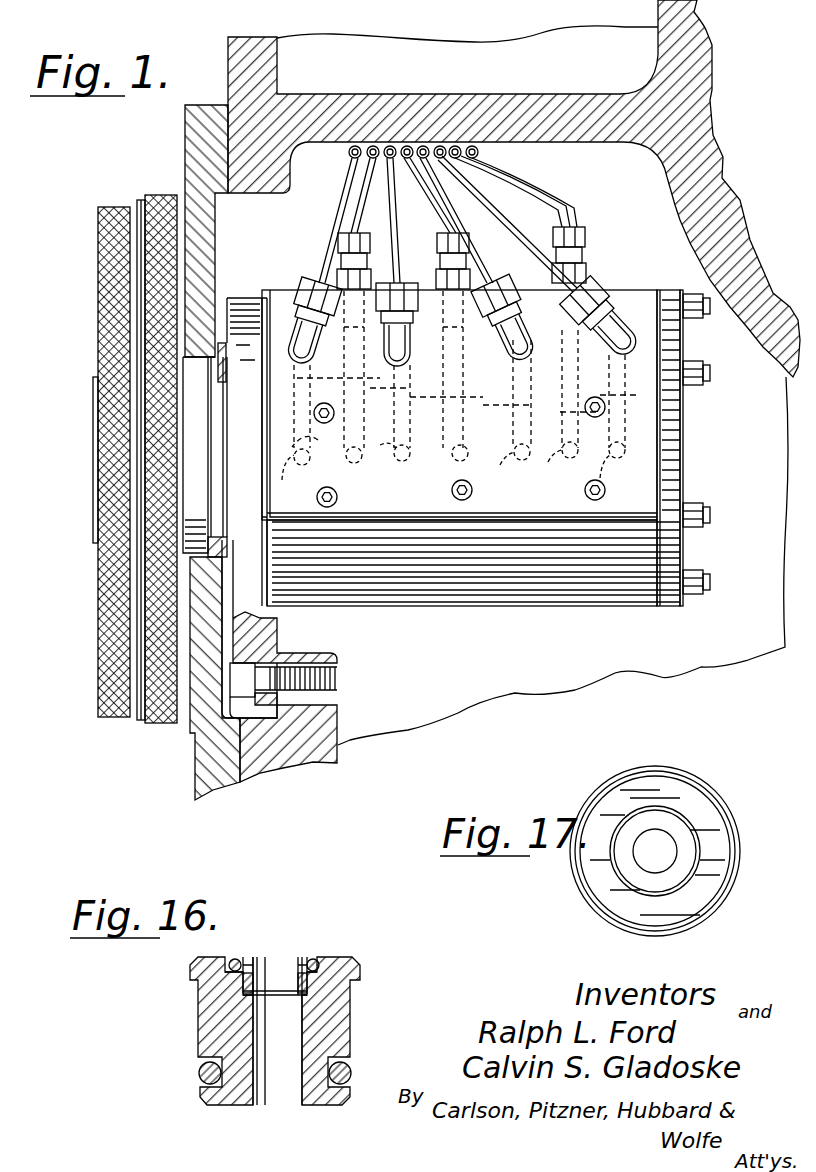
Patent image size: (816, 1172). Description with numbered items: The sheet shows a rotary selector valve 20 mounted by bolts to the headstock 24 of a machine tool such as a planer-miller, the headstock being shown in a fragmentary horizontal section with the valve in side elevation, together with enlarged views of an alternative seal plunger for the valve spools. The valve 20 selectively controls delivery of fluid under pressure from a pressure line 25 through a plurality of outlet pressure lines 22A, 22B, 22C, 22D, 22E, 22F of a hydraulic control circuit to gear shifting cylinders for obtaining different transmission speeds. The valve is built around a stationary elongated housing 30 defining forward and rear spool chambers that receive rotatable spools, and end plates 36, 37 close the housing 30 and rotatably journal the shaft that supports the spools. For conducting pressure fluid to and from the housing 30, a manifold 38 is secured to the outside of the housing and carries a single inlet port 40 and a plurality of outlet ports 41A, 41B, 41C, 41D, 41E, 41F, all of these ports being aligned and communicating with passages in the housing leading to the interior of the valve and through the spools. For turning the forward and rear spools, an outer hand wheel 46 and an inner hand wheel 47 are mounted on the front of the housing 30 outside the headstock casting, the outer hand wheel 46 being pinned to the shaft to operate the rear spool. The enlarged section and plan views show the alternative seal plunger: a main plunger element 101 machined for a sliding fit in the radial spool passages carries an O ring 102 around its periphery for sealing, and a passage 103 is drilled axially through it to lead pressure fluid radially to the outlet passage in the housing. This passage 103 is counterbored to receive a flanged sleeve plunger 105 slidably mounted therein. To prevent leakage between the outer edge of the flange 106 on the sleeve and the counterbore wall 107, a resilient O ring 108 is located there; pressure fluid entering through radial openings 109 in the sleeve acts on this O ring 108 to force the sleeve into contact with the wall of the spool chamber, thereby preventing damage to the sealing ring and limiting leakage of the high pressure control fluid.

In FIG. 1, the rotary selector valve 20 is at (534, 622).
In FIG. 1, the outlet pressure line 22A is at (354, 146).
In FIG. 1, the outlet pressure line 22B is at (373, 145).
In FIG. 1, the outlet pressure line 22C is at (391, 145).
In FIG. 1, the outlet pressure line 22D is at (424, 145).
In FIG. 1, the outlet pressure line 22E is at (441, 145).
In FIG. 1, the outlet pressure line 22F is at (457, 145).
In FIG. 1, the headstock 24 is at (292, 172).
In FIG. 1, the pressure line 25 is at (412, 145).
In FIG. 1, the valve housing 30 is at (593, 603).
In FIG. 1, the end plate 36 is at (280, 625).
In FIG. 1, the end plate 37 is at (686, 554).
In FIG. 1, the manifold 38 is at (670, 466).
In FIG. 1, the inlet port 40 is at (413, 406).
In FIG. 1, the outlet port 41A is at (299, 431).
In FIG. 1, the outlet port 41B is at (341, 377).
In FIG. 1, the outlet port 41C is at (388, 443).
In FIG. 1, the outlet port 41D is at (487, 390).
In FIG. 1, the outlet port 41E is at (555, 401).
In FIG. 1, the outlet port 41F is at (621, 422).
In FIG. 1, the outer hand wheel 46 is at (90, 304).
In FIG. 1, the inner hand wheel 47 is at (154, 183).
In FIG. 16, the main plunger element 101 is at (193, 1044).
In FIG. 17, the main plunger element 101 is at (750, 866).
In FIG. 16, the O ring 102 is at (198, 1074).
In FIG. 16, the passage 103 is at (294, 1090).
In FIG. 16, the flanged sleeve plunger 105 is at (236, 998).
In FIG. 17, the flanged sleeve plunger 105 is at (620, 883).
In FIG. 16, the flange 106 is at (316, 958).
In FIG. 17, the flange 106 is at (616, 858).
In FIG. 16, the counterbore wall 107 is at (312, 990).
In FIG. 16, the resilient O ring 108 is at (235, 958).
In FIG. 17, the resilient O ring 108 is at (694, 826).
In FIG. 16, the radial openings 109 is at (268, 962).